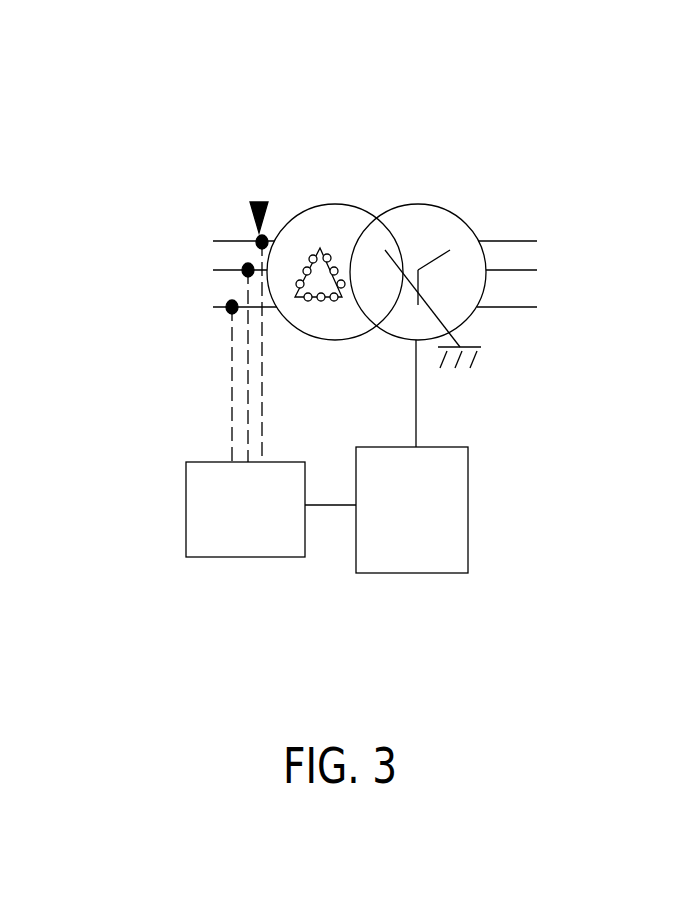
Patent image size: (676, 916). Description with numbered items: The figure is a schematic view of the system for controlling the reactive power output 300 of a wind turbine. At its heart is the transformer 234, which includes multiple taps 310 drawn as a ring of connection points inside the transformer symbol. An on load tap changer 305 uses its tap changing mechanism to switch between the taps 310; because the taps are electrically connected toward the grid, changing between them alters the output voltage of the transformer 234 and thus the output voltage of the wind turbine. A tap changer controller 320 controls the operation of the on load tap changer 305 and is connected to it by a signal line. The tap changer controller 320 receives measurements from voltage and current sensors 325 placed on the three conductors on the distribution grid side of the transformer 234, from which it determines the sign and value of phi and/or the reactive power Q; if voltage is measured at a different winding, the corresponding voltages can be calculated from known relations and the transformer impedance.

The system for controlling the reactive power output 300 is at (113, 45).
The voltage and current sensors 325 is at (259, 202).
The transformer 234 is at (417, 203).
The taps 310 is at (338, 258).
The tap changer controller 320 is at (235, 557).
The on load tap changer 305 is at (380, 573).